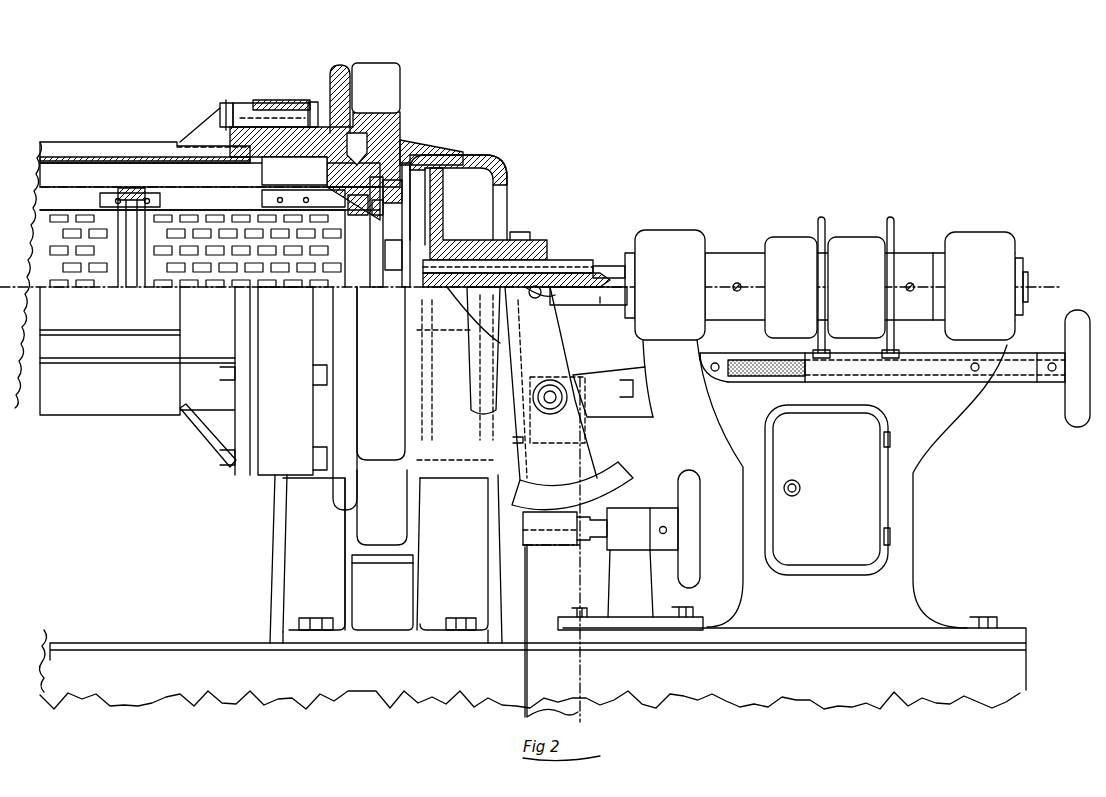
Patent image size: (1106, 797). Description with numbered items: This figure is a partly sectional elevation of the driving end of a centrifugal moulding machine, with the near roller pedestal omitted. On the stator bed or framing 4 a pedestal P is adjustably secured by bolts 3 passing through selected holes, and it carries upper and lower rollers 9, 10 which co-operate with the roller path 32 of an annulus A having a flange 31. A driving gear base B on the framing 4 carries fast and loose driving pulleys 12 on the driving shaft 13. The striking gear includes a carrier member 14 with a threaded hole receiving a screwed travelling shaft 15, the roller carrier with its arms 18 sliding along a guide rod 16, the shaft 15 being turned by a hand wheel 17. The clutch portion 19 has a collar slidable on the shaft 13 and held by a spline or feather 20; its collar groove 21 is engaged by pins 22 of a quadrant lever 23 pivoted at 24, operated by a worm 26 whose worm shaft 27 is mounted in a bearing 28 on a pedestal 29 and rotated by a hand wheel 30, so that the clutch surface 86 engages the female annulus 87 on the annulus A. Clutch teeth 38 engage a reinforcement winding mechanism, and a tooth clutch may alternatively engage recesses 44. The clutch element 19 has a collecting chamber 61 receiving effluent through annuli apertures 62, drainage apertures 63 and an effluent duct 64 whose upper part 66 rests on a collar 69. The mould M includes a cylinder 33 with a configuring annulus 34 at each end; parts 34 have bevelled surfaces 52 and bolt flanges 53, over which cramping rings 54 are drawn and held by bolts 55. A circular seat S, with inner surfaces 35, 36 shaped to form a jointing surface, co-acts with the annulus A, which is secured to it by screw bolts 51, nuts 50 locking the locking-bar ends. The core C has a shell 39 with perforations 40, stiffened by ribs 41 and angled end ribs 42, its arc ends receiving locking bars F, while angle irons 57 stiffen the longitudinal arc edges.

The bolts 3 is at (314, 618).
The stator bed or framing 4 is at (532, 668).
The upper rollers 9 is at (362, 70).
The lower rollers 10 is at (379, 502).
The fast and loose driving pulleys 12 is at (826, 285).
The driving shaft 13 is at (600, 305).
The carrier member 14 is at (935, 367).
The screwed travelling shaft 15 is at (748, 358).
The guide rod 16 is at (775, 360).
The hand wheel 17 is at (1065, 412).
The arms 18 is at (826, 218).
The clutch portion 19 is at (498, 168).
The spline or feather 20 is at (560, 265).
The collar groove 21 is at (520, 246).
The pins 22 is at (548, 305).
The quadrant lever 23 is at (572, 483).
The pivot 24 is at (550, 403).
The worm 26 is at (550, 528).
The worm shaft 27 is at (588, 540).
The bearing 28 is at (642, 529).
The pedestal 29 is at (630, 590).
The hand wheel 30 is at (700, 507).
The flange 31 is at (337, 66).
The roller path 32 is at (370, 115).
The cylinder 33 is at (158, 166).
The configuring annulus 34 is at (262, 150).
The inner surface 35 is at (305, 164).
The inner surface 36 is at (327, 178).
The clutch teeth 38 is at (375, 232).
The shell 39 is at (130, 187).
The perforations 40 is at (40, 250).
The ribs 41 is at (122, 287).
The angled end ribs 42 is at (303, 198).
The recesses 44 is at (402, 248).
The nuts 50 is at (379, 215).
The screw bolts 51 is at (407, 200).
The bevelled surfaces 52 is at (275, 100).
The bolt flanges 53 is at (226, 103).
The cramping rings 54 is at (312, 102).
The bolts 55 is at (215, 110).
The angle irons 57 is at (66, 142).
The collecting chamber 61 is at (488, 214).
The annuli apertures 62 is at (420, 183).
The drainage apertures 63 is at (443, 185).
The effluent duct 64 is at (542, 632).
The upper part of duct 66 is at (575, 350).
The collar 69 is at (495, 377).
The clutch surface 86 is at (443, 178).
The female annulus 87 is at (440, 145).
The annulus A is at (400, 125).
The driving gear base B is at (790, 484).
The core C is at (40, 187).
The locking bars F is at (40, 208).
The mould M is at (40, 146).
The pedestal P is at (386, 556).
The circular seat S is at (358, 222).